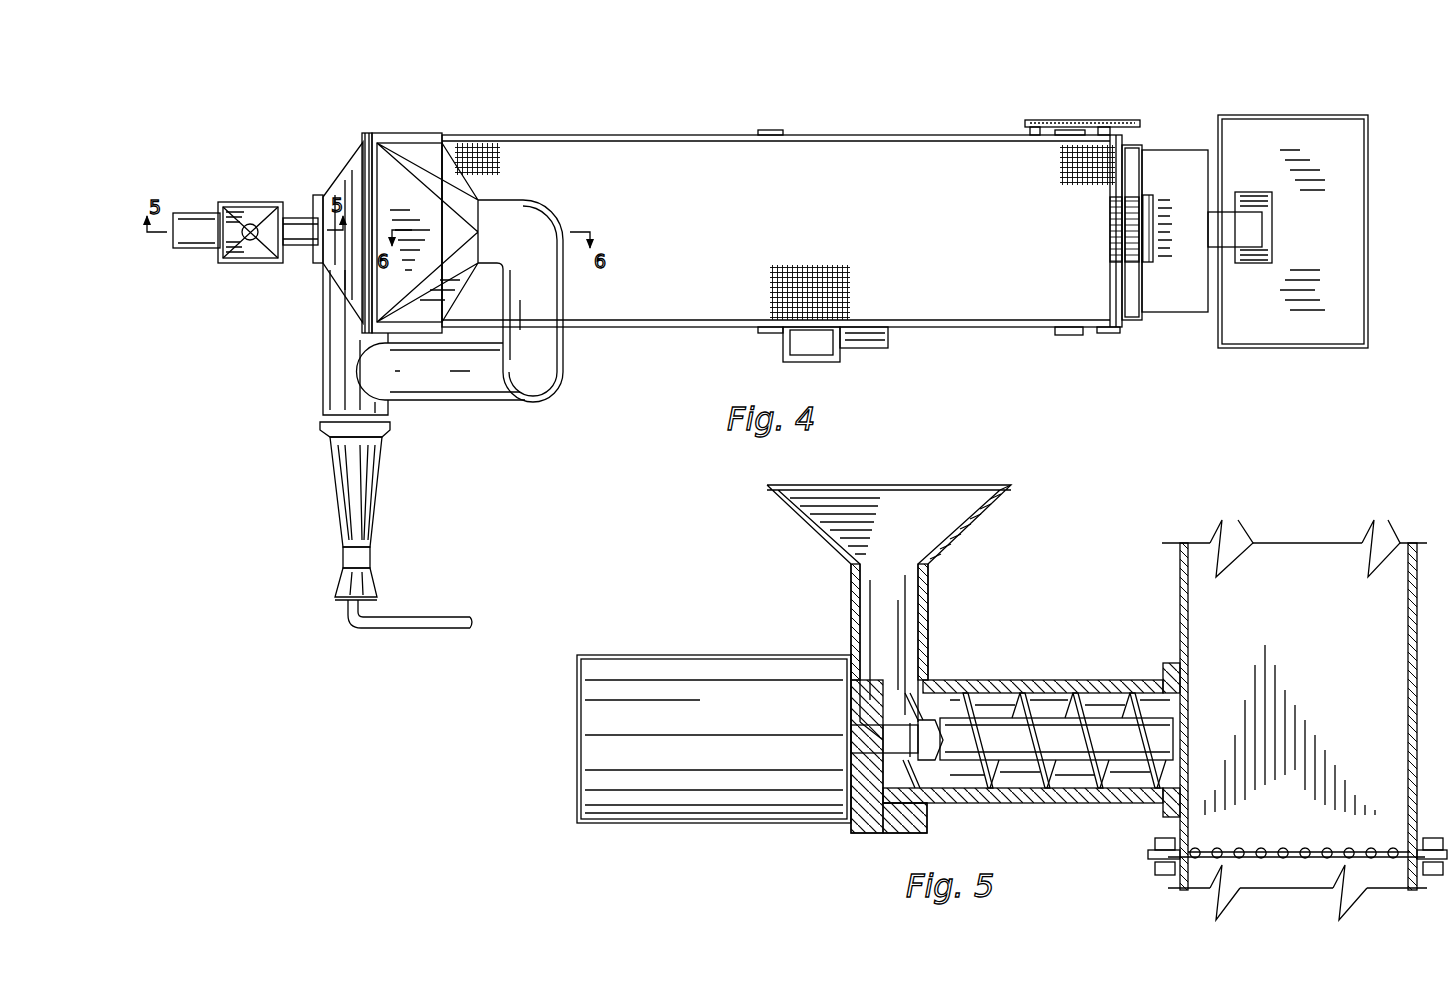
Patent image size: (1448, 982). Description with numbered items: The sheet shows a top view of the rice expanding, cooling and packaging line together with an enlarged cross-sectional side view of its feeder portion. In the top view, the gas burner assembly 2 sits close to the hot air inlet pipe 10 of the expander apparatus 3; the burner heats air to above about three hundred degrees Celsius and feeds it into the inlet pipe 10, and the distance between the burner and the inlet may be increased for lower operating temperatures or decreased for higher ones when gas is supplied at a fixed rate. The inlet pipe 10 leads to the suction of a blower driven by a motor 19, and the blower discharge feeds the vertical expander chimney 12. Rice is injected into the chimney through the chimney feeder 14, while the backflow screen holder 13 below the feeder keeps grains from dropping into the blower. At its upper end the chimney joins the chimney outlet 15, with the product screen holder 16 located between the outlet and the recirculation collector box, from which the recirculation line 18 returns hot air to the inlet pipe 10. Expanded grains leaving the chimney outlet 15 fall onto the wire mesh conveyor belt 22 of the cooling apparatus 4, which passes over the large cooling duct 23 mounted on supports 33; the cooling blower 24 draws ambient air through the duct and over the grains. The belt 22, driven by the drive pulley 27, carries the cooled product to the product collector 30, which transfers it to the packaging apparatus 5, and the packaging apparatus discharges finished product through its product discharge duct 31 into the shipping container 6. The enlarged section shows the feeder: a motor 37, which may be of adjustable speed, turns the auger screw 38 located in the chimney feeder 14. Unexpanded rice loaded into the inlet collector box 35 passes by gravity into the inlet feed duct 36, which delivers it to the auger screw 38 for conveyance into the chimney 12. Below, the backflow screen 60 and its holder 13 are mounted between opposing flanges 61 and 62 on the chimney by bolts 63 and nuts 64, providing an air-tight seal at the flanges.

In FIG. 4, the gas burner assembly 2 is at (378, 513).
In FIG. 4, the expander apparatus 3 is at (441, 128).
In FIG. 4, the cooling apparatus 4 is at (881, 125).
In FIG. 4, the packaging apparatus 5 is at (1186, 144).
In FIG. 4, the shipping container 6 is at (1346, 112).
In FIG. 4, the hot air inlet pipe 10 is at (322, 333).
In FIG. 5, the expander chimney 12 is at (1180, 625).
In FIG. 5, the backflow screen holder 13 is at (1148, 855).
In FIG. 4, the chimney feeder 14 is at (297, 218).
In FIG. 5, the chimney feeder 14 is at (1022, 680).
In FIG. 4, the chimney outlet 15 is at (342, 170).
In FIG. 4, the product screen holder 16 is at (366, 133).
In FIG. 4, the recirculation line 18 is at (566, 386).
In FIG. 4, the motor 19 is at (462, 178).
In FIG. 4, the wire mesh conveyor belt 22 is at (605, 165).
In FIG. 4, the cooling duct 23 is at (961, 326).
In FIG. 4, the cooling blower 24 is at (846, 357).
In FIG. 4, the drive pulley 27 is at (1125, 120).
In FIG. 4, the product collector 30 is at (1143, 147).
In FIG. 4, the packaging apparatus product discharge duct 31 is at (1253, 232).
In FIG. 4, the supports 33 is at (1068, 335).
In FIG. 4, the inlet collector box 35 is at (240, 202).
In FIG. 5, the inlet collector box 35 is at (966, 536).
In FIG. 5, the inlet feed duct 36 is at (929, 628).
In FIG. 4, the motor 37 is at (192, 249).
In FIG. 5, the motor 37 is at (688, 655).
In FIG. 5, the auger screw 38 is at (1072, 752).
In FIG. 5, the backflow screen 60 is at (1265, 845).
In FIG. 5, the flange 61 is at (1443, 838).
In FIG. 5, the flange 62 is at (1440, 876).
In FIG. 5, the bolts 63 is at (1152, 843).
In FIG. 5, the nuts 64 is at (1152, 870).